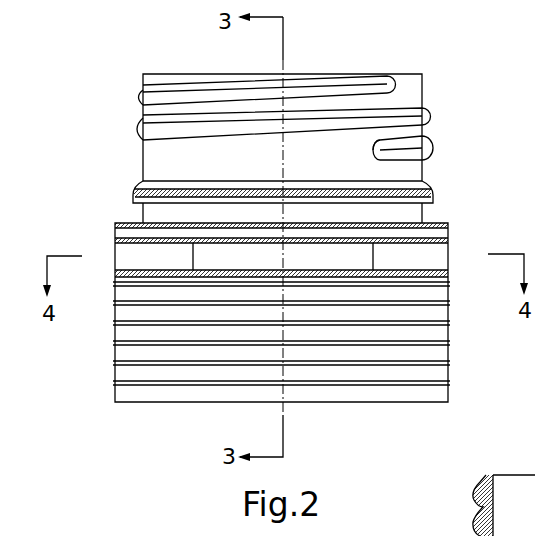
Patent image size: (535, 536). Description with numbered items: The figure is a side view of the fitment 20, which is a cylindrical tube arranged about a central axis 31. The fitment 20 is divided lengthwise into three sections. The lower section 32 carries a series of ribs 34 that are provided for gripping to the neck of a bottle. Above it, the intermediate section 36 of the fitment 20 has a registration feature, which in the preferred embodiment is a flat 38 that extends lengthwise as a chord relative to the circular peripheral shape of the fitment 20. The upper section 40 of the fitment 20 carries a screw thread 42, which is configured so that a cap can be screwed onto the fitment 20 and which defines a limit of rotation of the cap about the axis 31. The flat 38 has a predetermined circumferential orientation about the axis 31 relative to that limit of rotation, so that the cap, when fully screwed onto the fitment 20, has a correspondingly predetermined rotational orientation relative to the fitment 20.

The fitment 20 is at (96, 94).
The screw thread 42 is at (137, 94).
The central axis 31 is at (284, 157).
The upper section 40 is at (162, 157).
The flat 38 is at (335, 258).
The intermediate section 36 is at (448, 255).
The lower section 32 is at (138, 332).
The ribs 34 is at (114, 382).